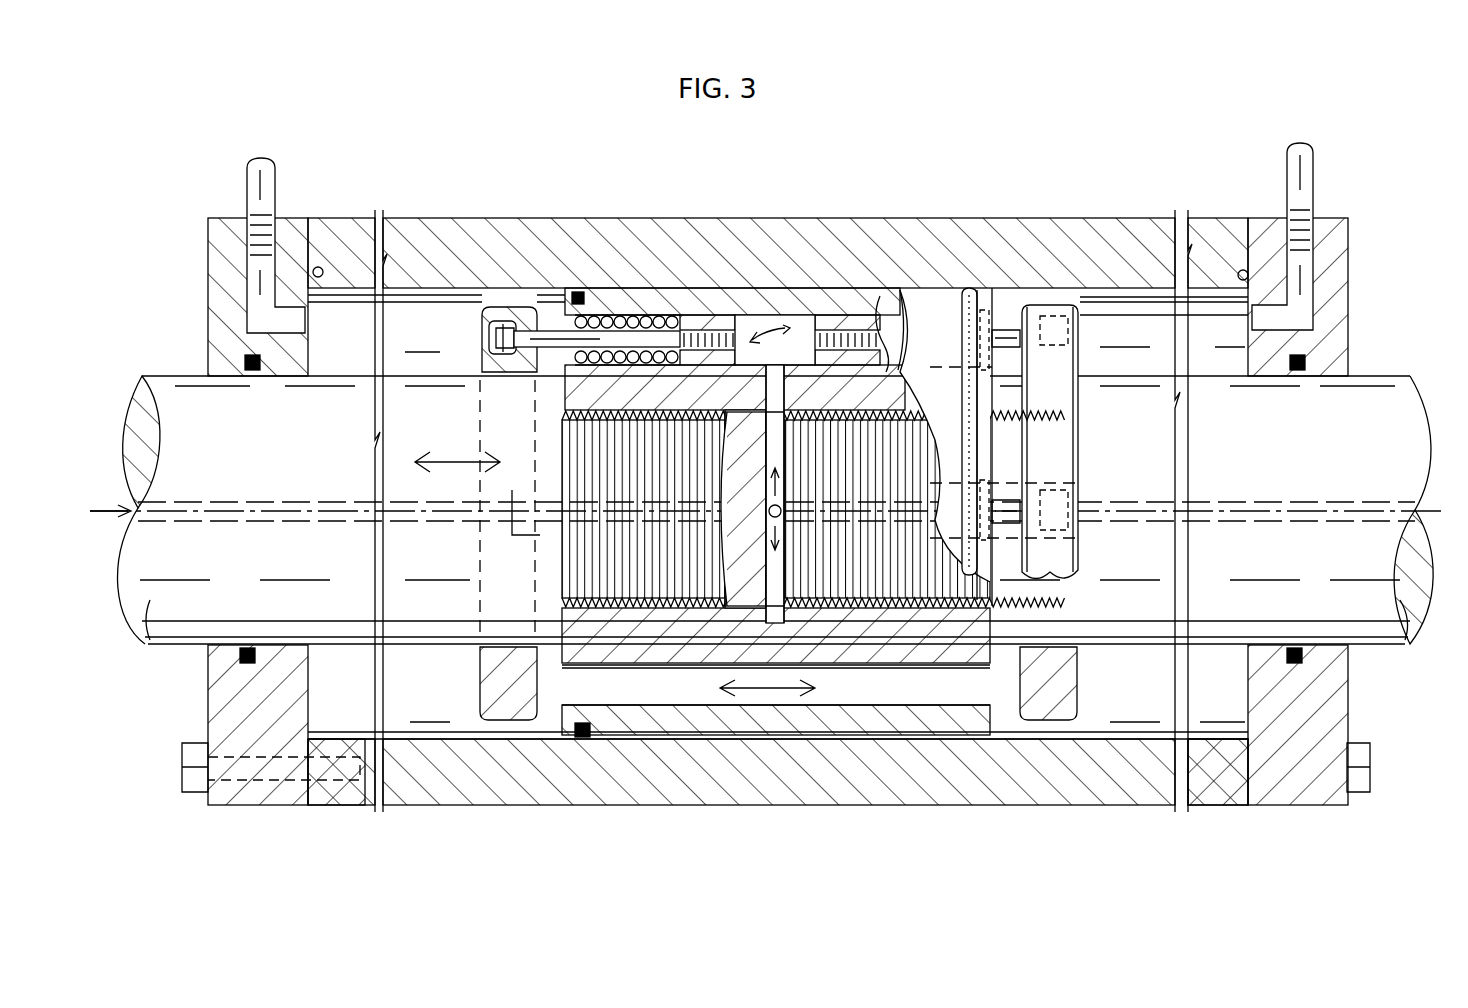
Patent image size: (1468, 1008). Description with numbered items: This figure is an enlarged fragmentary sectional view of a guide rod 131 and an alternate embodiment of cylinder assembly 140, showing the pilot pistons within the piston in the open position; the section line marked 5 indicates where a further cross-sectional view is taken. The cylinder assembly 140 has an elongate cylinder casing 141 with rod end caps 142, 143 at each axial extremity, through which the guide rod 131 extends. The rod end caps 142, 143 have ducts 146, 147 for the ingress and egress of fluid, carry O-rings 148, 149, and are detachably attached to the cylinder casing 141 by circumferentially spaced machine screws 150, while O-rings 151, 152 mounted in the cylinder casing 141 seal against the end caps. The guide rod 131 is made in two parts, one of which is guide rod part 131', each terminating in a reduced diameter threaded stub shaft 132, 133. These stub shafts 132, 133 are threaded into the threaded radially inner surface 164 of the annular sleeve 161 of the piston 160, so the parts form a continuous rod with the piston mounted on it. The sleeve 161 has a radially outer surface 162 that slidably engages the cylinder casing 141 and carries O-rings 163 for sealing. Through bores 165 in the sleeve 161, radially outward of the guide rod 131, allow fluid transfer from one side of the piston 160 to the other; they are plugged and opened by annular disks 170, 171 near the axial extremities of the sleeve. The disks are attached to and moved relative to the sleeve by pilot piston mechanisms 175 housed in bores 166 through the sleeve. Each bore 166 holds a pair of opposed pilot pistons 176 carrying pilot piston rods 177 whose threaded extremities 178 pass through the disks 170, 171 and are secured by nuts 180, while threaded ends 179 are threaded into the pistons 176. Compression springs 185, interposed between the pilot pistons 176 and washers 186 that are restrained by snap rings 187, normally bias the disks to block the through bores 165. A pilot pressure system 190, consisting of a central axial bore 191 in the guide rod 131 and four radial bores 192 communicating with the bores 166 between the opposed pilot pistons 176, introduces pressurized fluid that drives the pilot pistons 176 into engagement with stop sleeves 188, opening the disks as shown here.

The section line 5- 5 is at (472, 200).
The guide rod 131 is at (779, 476).
The guide rod part 131' is at (117, 639).
The threaded stub shaft 132 is at (682, 580).
The threaded stub shaft 133 is at (922, 622).
The cylinder assembly 140 is at (778, 467).
The cylinder casing 141 is at (990, 232).
The rod end cap 142 is at (212, 706).
The rod end cap 143 is at (1345, 706).
The duct 146 is at (258, 185).
The duct 147 is at (1310, 168).
The O-ring 148 is at (247, 648).
The O-ring 149 is at (1300, 375).
The machine screw 150 is at (195, 790).
The O-ring 151 is at (320, 268).
The O-ring 152 is at (1242, 270).
The piston 160 is at (783, 333).
The annular sleeve 161 is at (780, 722).
The radially outer surface 162 is at (868, 722).
The O-ring 163 is at (978, 457).
The threaded radially inner surface 164 is at (985, 585).
The through bore 165 is at (884, 580).
The bore 166 is at (800, 320).
The annular disk 170 is at (505, 722).
The annular disk 171 is at (1048, 722).
The pilot piston mechanism 175 is at (660, 312).
The pilot piston 176 is at (735, 328).
The pilot piston rod 177 is at (642, 342).
The threaded extremity 178 is at (492, 340).
The threaded end 179 is at (716, 360).
The nut 180 is at (500, 352).
The compression spring 185 is at (640, 312).
The washer 186 is at (576, 297).
The snap ring 187 is at (562, 398).
The stop sleeve 188 is at (688, 300).
The pilot pressure system 190 is at (126, 491).
The central axial bore 191 is at (235, 500).
The radial bore 192 is at (790, 398).